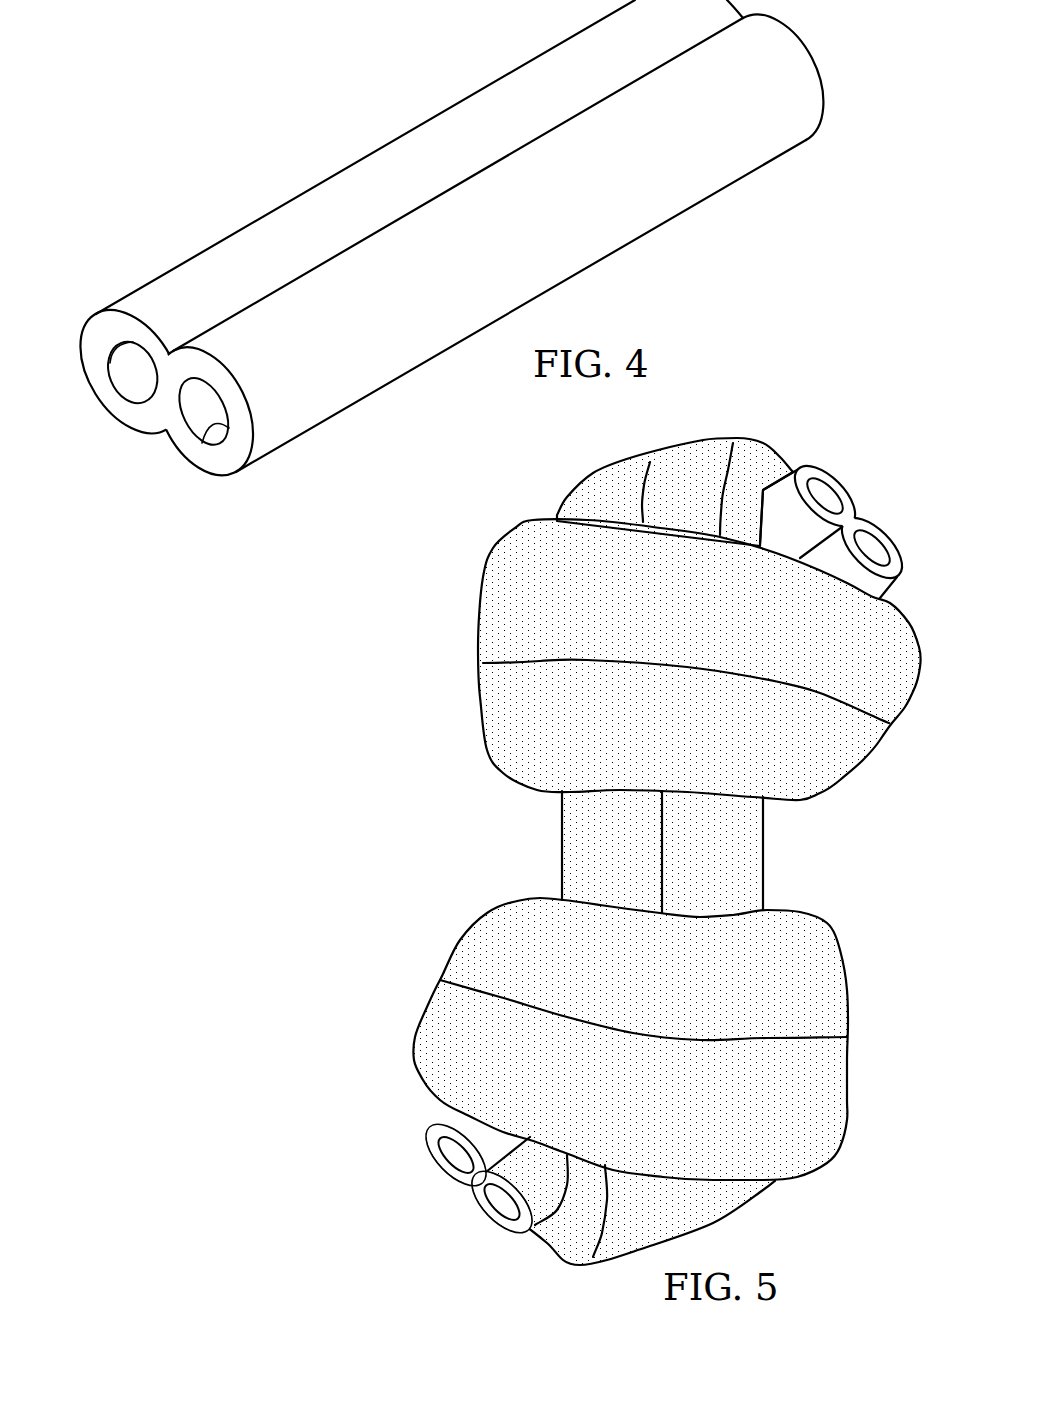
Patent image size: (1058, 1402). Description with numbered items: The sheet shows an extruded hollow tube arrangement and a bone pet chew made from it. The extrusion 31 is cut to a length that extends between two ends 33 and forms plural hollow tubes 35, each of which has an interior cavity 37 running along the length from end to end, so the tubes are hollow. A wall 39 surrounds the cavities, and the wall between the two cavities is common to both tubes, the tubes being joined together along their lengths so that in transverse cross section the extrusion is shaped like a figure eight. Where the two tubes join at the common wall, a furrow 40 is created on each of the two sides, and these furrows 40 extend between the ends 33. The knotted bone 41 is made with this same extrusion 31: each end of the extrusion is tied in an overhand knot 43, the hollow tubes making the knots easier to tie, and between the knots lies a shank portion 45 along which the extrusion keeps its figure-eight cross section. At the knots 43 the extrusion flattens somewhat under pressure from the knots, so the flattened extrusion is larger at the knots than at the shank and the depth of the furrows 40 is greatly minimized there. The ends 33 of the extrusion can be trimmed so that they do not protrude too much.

In FIG. 4, the extrusion 31 is at (452, 266).
In FIG. 5, the extrusion 31 is at (472, 598).
In FIG. 4, the ends 33 is at (86, 327).
In FIG. 5, the ends 33 is at (888, 530).
In FIG. 4, the hollow tubes 35 is at (313, 187).
In FIG. 5, the hollow tubes 35 is at (452, 1180).
In FIG. 4, the interior cavity 37 is at (110, 360).
In FIG. 5, the interior cavity 37 is at (435, 1155).
In FIG. 4, the wall 39 is at (112, 395).
In FIG. 4, the furrow 40 is at (522, 130).
In FIG. 5, the furrow 40 is at (697, 654).
In FIG. 5, the knotted bone 41 is at (620, 862).
In FIG. 5, the overhand knot 43 is at (485, 640).
In FIG. 5, the shank portion 45 is at (568, 837).